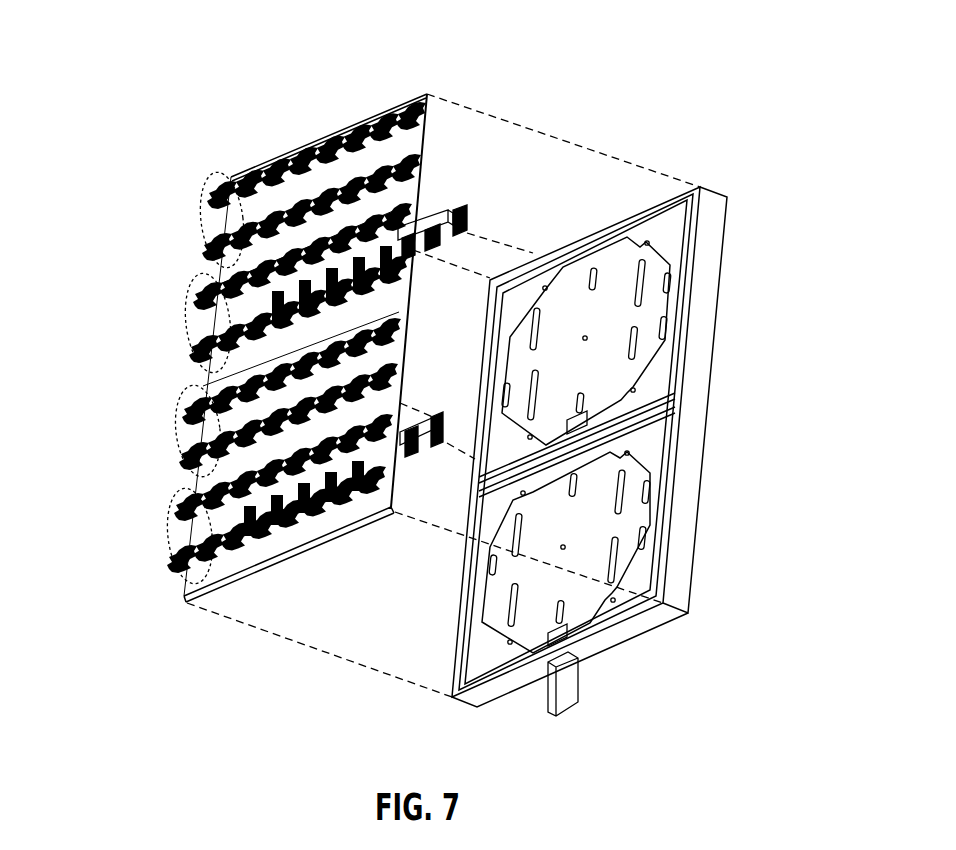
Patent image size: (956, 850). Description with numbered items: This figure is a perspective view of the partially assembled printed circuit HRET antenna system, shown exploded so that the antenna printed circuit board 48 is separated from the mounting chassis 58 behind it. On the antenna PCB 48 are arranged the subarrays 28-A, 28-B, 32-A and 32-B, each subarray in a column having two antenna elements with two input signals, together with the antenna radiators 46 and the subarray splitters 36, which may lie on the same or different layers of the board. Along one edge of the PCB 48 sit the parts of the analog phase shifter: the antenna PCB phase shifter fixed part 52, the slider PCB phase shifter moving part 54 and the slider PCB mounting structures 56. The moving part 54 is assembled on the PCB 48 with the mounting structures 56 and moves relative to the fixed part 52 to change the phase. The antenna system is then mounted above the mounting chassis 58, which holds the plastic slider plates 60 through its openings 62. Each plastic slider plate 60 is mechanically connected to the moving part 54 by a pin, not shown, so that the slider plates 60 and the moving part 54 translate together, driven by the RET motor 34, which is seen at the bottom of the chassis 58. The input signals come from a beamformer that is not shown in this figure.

The subarray 28-A is at (200, 233).
The subarray 28-B is at (187, 338).
The subarray 32-A is at (177, 440).
The subarray 32-B is at (170, 553).
The subarray splitter 36 is at (427, 178).
The antenna printed circuit board 48 is at (428, 142).
The antenna PCB phase shifter fixed part 52 is at (421, 192).
The slider PCB phase shifter moving part 54 is at (447, 198).
The slider PCB mounting structure 56 is at (470, 224).
The antenna radiator 46 is at (398, 318).
The mounting chassis 58 is at (454, 660).
The plastic slider plate 60 is at (512, 537).
The opening 62 is at (512, 548).
The RET motor 34 is at (580, 685).